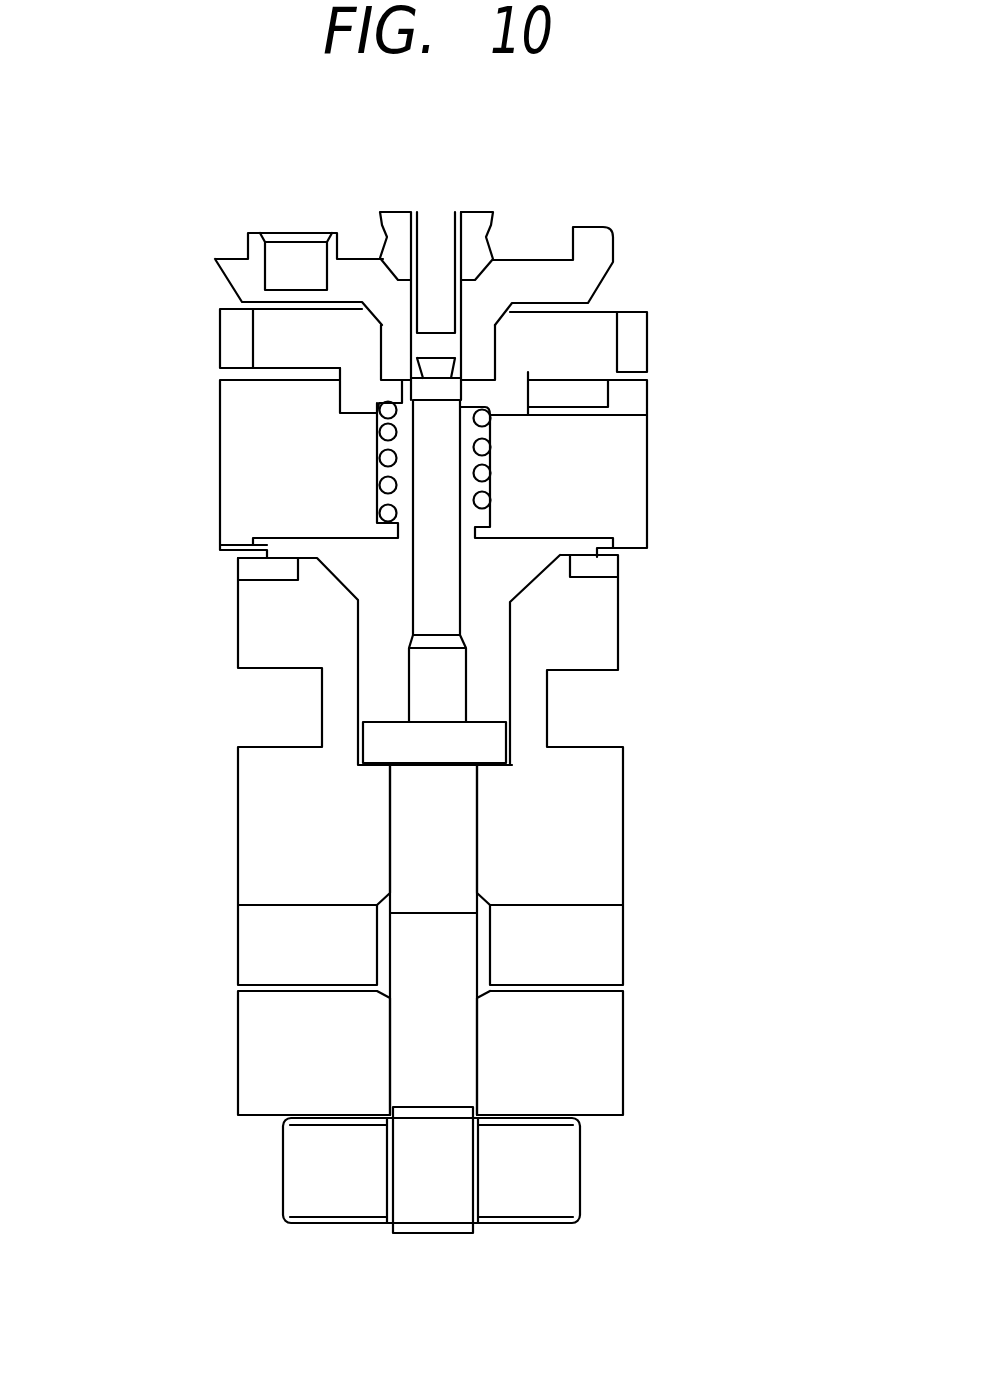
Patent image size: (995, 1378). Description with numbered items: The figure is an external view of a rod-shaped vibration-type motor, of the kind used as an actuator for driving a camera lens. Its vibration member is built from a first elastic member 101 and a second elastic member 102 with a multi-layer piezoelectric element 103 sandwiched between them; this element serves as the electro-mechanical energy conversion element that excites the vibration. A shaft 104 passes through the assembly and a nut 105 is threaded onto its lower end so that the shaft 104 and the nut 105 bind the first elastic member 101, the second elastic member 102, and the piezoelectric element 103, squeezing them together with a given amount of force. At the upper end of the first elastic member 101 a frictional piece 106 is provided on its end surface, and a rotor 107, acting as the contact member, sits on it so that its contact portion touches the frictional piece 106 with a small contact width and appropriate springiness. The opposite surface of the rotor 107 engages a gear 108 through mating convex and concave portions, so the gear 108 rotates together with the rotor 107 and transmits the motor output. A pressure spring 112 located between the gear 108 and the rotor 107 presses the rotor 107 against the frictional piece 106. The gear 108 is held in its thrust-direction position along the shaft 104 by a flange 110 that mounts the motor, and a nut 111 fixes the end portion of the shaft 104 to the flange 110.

The first elastic member 101 is at (258, 825).
The second elastic member 102 is at (257, 1048).
The multi-layer piezoelectric element 103 is at (257, 938).
The shaft 104 is at (437, 1218).
The nut 105 is at (568, 1168).
The frictional piece 106 is at (607, 567).
The rotor 107 is at (232, 452).
The gear 108 is at (272, 343).
The flange 110 is at (222, 277).
The nut 111 is at (480, 223).
The pressure spring 112 is at (483, 472).